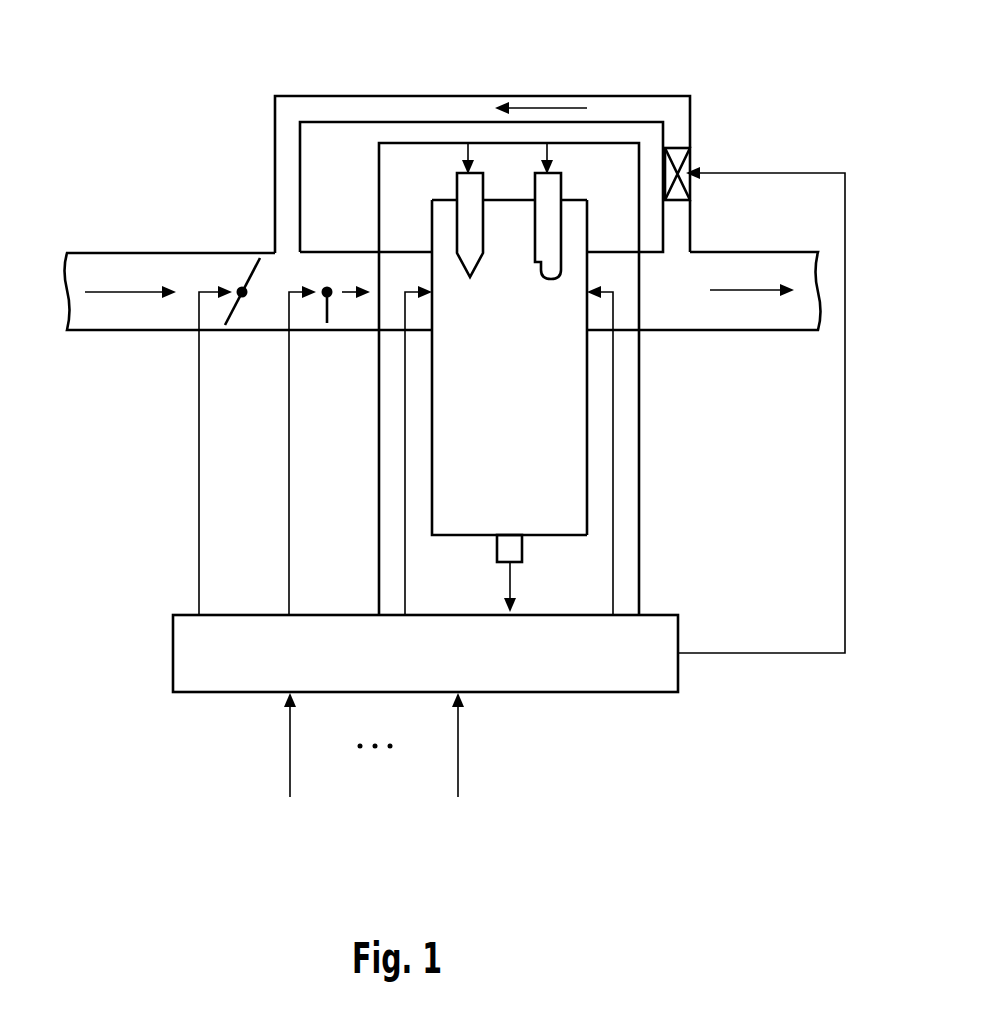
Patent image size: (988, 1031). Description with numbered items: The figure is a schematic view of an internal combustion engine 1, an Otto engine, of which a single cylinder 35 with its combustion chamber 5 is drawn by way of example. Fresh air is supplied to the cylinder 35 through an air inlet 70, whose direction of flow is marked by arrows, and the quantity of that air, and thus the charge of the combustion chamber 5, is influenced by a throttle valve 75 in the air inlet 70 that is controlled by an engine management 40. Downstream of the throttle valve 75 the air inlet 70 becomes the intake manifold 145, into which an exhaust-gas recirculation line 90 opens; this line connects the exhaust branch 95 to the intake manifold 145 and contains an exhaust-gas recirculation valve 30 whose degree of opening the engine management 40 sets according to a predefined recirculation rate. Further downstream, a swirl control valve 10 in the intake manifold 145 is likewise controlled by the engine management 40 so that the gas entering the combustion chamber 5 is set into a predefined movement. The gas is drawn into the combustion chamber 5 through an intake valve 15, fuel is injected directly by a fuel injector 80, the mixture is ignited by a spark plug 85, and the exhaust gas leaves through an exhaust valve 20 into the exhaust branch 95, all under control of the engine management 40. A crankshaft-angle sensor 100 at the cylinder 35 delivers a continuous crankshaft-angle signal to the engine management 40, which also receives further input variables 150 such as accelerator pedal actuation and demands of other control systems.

The internal combustion engine 1 is at (734, 98).
The combustion chamber 5 is at (567, 480).
The swirl control valve 10 is at (330, 320).
The intake valve 15 is at (427, 274).
The exhaust valve 20 is at (590, 275).
The exhaust-gas recirculation valve 30 is at (688, 150).
The cylinder 35 is at (590, 406).
The engine management 40 is at (635, 695).
The air inlet 70 is at (100, 272).
The throttle valve 75 is at (245, 287).
The fuel injector 80 is at (458, 267).
The spark plug 85 is at (540, 262).
The exhaust-gas recirculation line 90 is at (443, 112).
The exhaust branch 95 is at (762, 270).
The crankshaft-angle sensor 100 is at (497, 549).
The intake manifold 145 is at (352, 270).
The input variables 150 is at (290, 757).